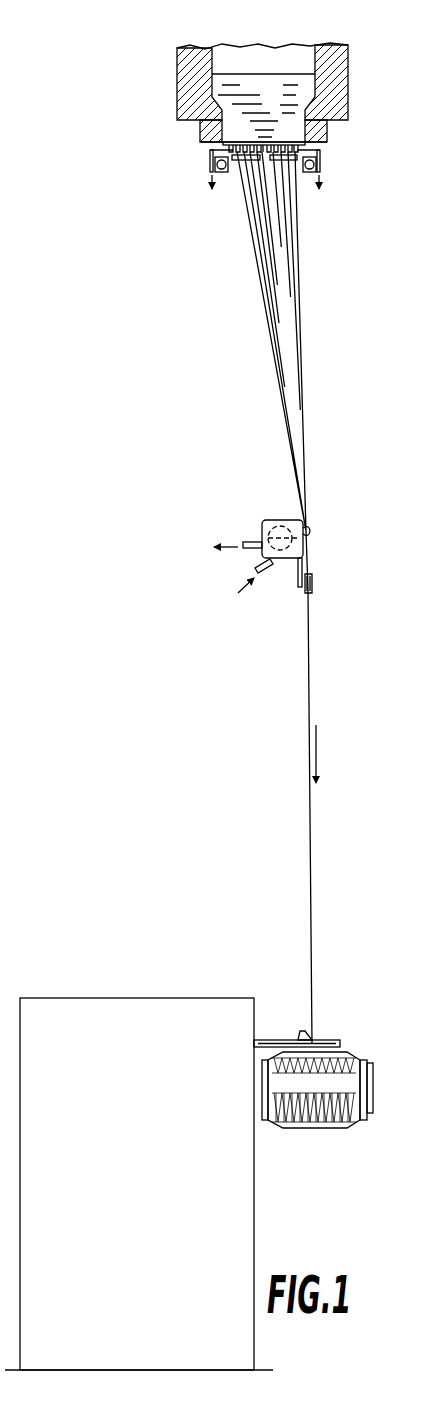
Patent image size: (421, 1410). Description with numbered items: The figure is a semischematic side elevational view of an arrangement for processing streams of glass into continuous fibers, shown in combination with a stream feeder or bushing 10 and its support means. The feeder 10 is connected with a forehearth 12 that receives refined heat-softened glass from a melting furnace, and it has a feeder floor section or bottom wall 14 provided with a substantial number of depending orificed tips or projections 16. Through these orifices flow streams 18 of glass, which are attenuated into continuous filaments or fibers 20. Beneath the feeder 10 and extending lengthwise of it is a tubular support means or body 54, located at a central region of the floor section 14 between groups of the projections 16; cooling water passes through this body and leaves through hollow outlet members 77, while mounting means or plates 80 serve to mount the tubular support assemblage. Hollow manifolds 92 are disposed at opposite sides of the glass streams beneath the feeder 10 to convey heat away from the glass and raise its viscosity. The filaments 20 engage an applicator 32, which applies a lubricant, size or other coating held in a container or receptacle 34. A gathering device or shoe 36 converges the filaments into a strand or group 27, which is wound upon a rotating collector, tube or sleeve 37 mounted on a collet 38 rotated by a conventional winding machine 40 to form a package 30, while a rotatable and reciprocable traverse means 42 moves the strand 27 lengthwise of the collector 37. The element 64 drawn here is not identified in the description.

The stream feeder or bushing 10 is at (208, 132).
The forehearth 12 is at (358, 57).
The feeder floor section or bottom wall 14 is at (287, 142).
The tips or projections 16 is at (327, 128).
The streams of glass 18 is at (240, 154).
The continuous filaments or fibers 20 is at (280, 220).
The strand or group of filaments 27 is at (308, 653).
The package 30 is at (348, 1049).
The applicator 32 is at (303, 522).
The container or receptacle 34 is at (262, 528).
The gathering device or shoe 36 is at (303, 592).
The collector, tube or sleeve 37 is at (363, 1060).
The collet 38 is at (375, 1113).
The winding machine 40 is at (132, 994).
The traverse means 42 is at (315, 1045).
The tubular support means or body 54 is at (265, 155).
The bushing 64 is at (273, 142).
The hollow outlet members 77 is at (215, 158).
The mounting means, members or plates 80 is at (210, 148).
The hollow members or manifolds 92 is at (212, 170).